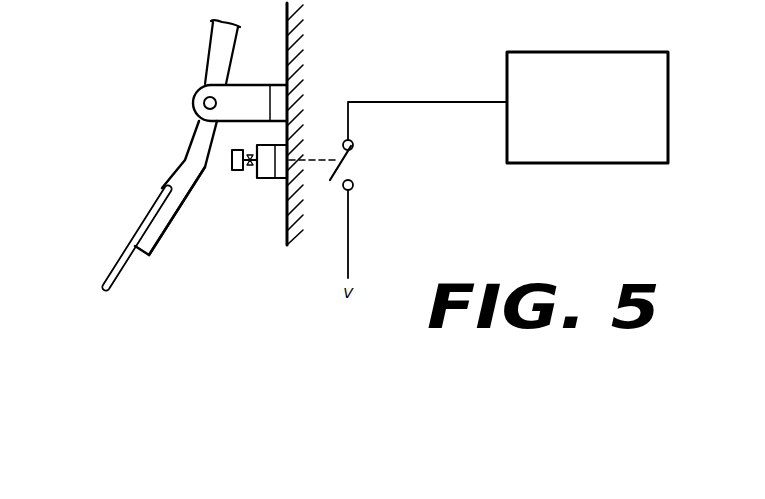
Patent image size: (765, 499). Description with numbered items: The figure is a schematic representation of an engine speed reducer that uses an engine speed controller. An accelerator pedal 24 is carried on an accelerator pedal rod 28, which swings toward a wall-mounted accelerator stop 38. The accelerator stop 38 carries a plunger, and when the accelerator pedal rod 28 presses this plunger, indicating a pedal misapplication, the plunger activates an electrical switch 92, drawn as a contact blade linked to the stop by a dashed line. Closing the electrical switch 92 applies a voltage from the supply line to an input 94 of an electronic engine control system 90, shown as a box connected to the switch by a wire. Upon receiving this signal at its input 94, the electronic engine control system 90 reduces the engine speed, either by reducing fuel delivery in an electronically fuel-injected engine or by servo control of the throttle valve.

The pedal pad 24 is at (108, 267).
The accelerator pedal rod 28 is at (150, 250).
The accelerator stop 38 is at (260, 186).
The electronic engine control system 90 is at (599, 110).
The electrical switch 92 is at (349, 165).
The input 94 is at (506, 101).